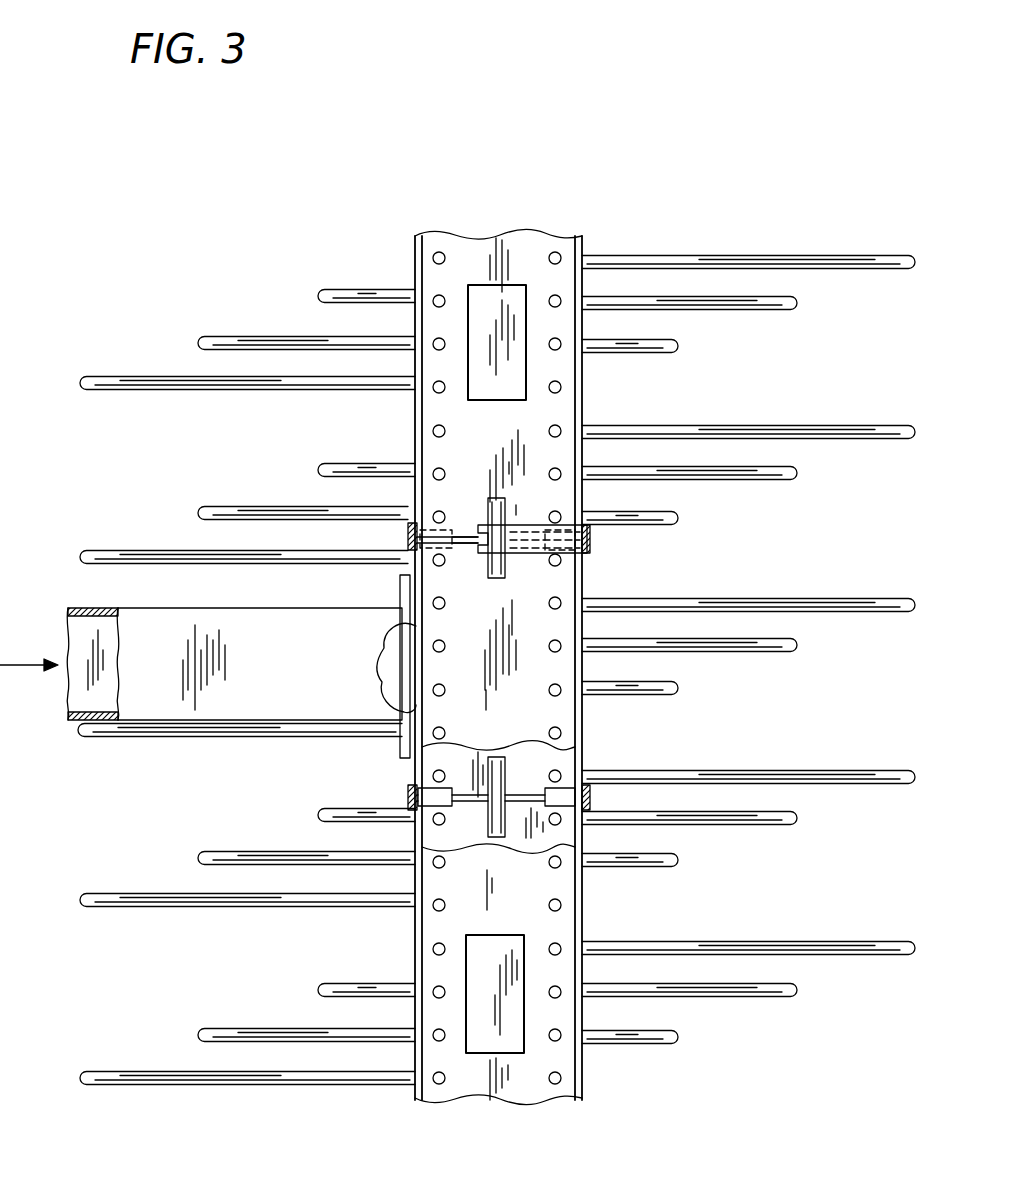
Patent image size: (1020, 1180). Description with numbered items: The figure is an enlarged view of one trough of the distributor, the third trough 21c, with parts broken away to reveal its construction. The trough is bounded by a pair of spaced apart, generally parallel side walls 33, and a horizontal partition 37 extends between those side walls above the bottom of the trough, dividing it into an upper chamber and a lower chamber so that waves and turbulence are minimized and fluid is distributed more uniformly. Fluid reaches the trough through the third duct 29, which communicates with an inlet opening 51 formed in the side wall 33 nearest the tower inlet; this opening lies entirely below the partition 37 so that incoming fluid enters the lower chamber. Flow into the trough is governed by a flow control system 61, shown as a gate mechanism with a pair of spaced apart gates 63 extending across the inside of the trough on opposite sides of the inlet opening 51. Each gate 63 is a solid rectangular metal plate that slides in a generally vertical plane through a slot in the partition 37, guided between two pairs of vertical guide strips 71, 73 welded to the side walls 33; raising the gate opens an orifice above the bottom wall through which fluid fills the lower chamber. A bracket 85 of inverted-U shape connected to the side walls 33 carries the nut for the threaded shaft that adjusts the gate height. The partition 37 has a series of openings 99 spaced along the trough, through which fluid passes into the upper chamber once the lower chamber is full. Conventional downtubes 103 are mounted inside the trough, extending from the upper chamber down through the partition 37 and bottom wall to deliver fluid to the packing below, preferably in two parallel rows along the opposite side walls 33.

The third trough 21c is at (592, 1076).
The third duct 29 is at (72, 720).
The side walls 33 is at (415, 410).
The horizontal partition 37 is at (532, 248).
The inlet opening 51 is at (406, 668).
The flow control system 61 is at (598, 541).
The gates 63 is at (455, 548).
The vertical guide strips 71 is at (440, 522).
The vertical guide strips 73 is at (420, 560).
The bracket 85 is at (535, 558).
The openings 99 is at (515, 332).
The downtubes 103 is at (255, 342).